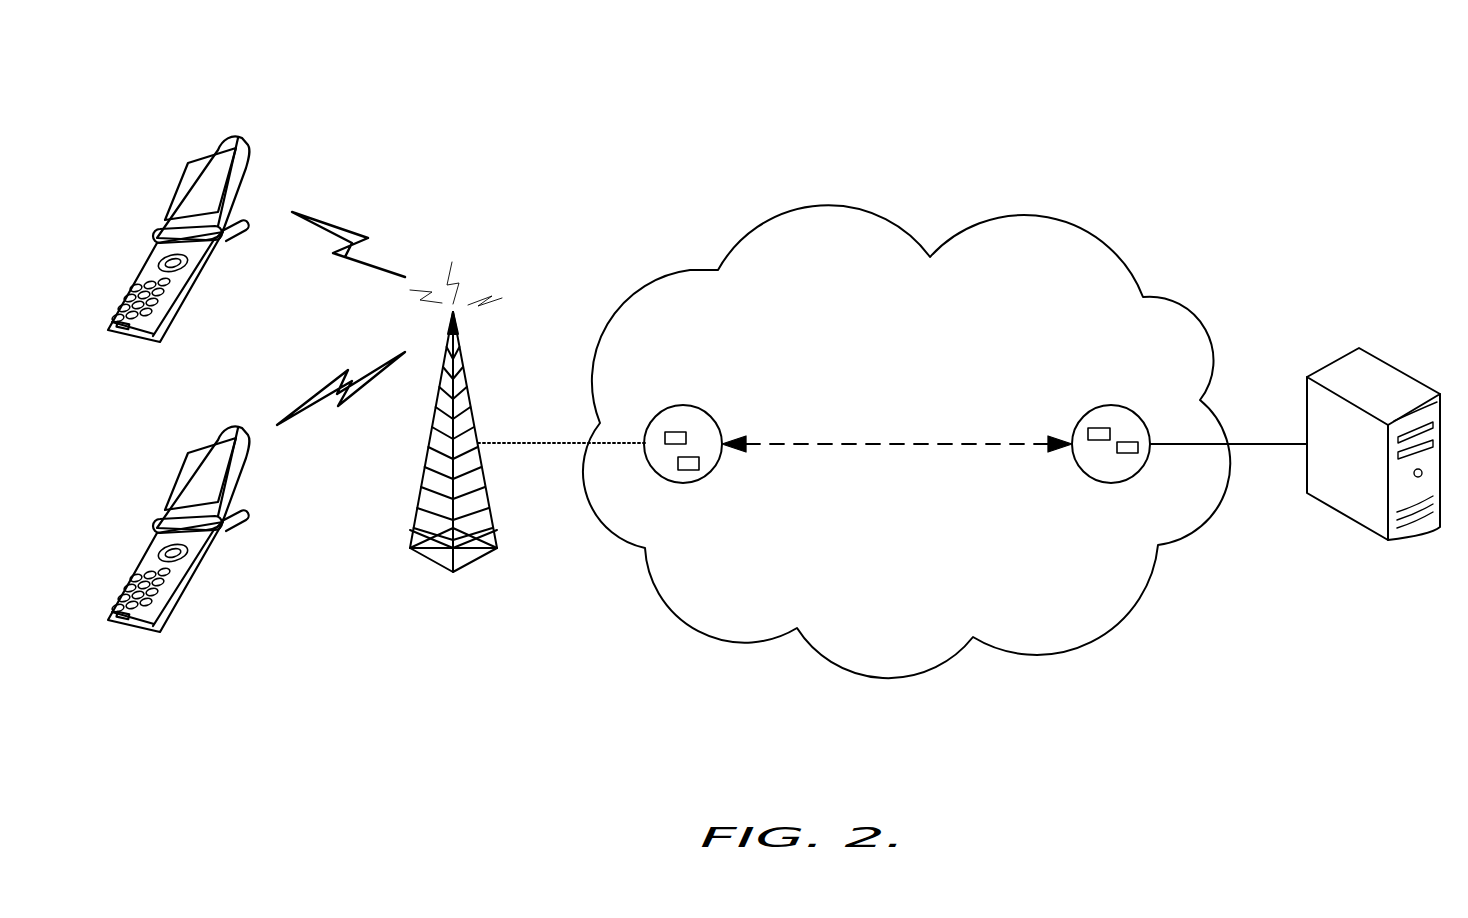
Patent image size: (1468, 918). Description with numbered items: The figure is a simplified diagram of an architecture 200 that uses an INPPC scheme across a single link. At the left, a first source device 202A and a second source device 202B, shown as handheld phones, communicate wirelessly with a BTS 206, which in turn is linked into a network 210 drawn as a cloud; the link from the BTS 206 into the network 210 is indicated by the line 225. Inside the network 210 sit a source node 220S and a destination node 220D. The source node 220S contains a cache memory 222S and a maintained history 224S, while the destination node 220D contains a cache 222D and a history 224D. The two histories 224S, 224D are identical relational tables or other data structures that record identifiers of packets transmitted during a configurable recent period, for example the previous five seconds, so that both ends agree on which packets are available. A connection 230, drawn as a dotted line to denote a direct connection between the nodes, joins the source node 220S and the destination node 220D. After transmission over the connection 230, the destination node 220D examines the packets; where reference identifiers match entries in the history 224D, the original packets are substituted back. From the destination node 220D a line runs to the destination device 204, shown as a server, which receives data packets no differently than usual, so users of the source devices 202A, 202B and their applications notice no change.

The architecture 200 is at (426, 88).
The first source device 202A is at (206, 285).
The second source device 202B is at (206, 575).
The destination device 204 is at (1368, 348).
The BTS 206 is at (424, 460).
The network 210 is at (835, 205).
The source node 220S is at (703, 412).
The destination node 220D is at (1112, 405).
The cache memory 222S is at (700, 463).
The cache 222D is at (1095, 428).
The maintained history 224S is at (675, 432).
The history 224D is at (1138, 450).
The link between base station and source node 225 is at (539, 441).
The connection 230 is at (898, 440).